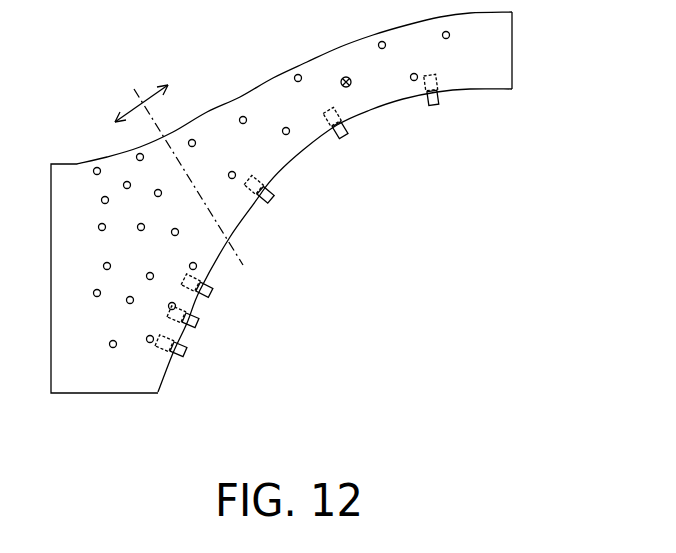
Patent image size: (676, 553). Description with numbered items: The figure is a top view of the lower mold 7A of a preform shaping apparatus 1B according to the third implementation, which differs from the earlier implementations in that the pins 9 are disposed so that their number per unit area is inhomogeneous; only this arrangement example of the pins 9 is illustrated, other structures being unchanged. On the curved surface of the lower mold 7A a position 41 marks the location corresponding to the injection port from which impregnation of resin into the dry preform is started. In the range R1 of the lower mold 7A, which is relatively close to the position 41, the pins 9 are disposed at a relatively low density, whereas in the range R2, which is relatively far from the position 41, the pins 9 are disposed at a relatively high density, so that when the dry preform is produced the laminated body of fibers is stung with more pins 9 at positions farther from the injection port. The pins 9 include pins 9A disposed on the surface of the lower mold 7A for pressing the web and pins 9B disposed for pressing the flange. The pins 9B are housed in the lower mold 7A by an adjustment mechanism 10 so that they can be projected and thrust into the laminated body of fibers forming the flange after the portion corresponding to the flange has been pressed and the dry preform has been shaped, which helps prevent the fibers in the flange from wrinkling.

The preform shaping apparatus 1B is at (103, 84).
The lower mold 7A is at (265, 100).
The position corresponding to an injection port 41 is at (346, 77).
The pins 9 is at (427, 135).
The pins 9A is at (290, 131).
The pins 9B is at (343, 136).
The adjustment mechanism 10 is at (438, 86).
The range R1 is at (159, 91).
The range R2 is at (160, 177).